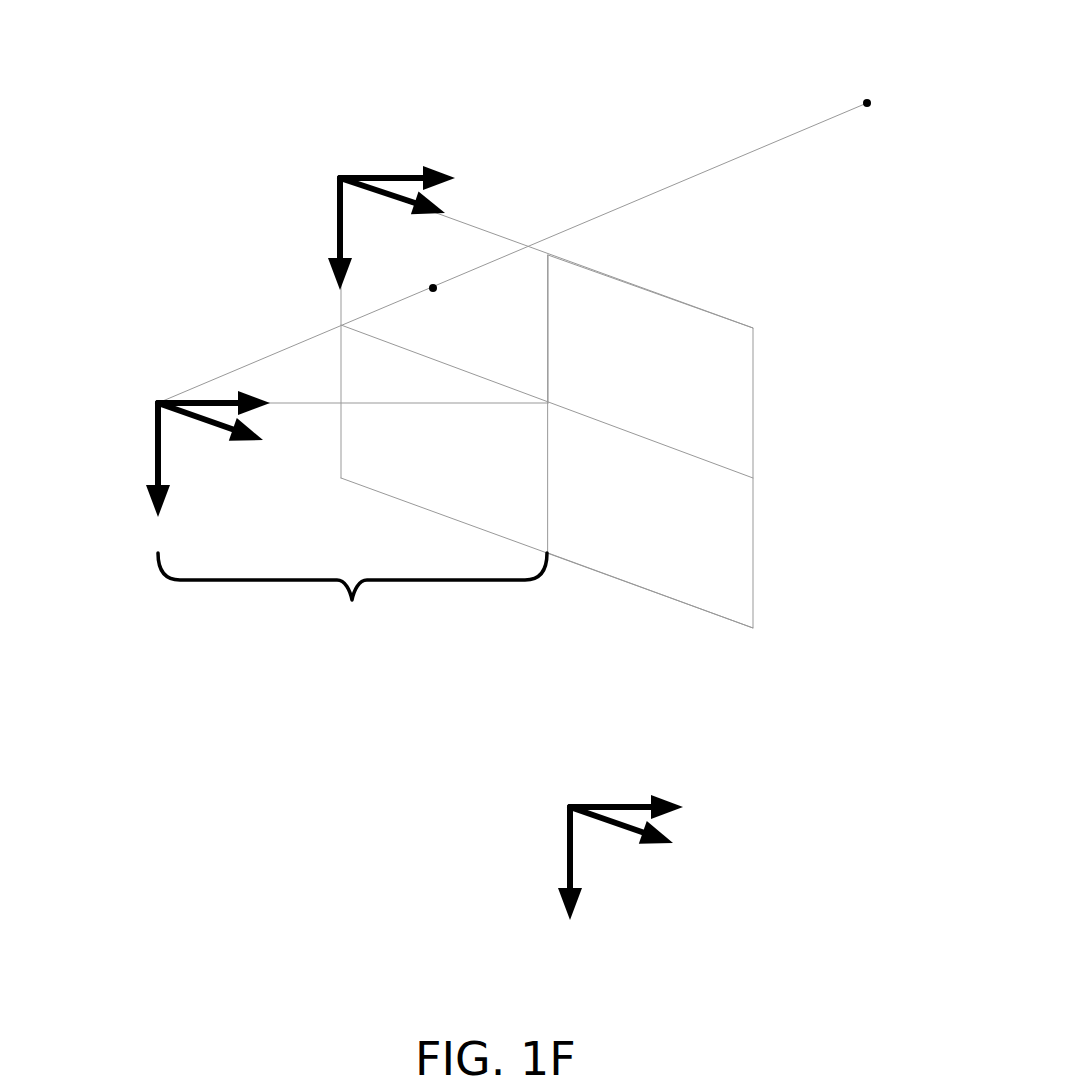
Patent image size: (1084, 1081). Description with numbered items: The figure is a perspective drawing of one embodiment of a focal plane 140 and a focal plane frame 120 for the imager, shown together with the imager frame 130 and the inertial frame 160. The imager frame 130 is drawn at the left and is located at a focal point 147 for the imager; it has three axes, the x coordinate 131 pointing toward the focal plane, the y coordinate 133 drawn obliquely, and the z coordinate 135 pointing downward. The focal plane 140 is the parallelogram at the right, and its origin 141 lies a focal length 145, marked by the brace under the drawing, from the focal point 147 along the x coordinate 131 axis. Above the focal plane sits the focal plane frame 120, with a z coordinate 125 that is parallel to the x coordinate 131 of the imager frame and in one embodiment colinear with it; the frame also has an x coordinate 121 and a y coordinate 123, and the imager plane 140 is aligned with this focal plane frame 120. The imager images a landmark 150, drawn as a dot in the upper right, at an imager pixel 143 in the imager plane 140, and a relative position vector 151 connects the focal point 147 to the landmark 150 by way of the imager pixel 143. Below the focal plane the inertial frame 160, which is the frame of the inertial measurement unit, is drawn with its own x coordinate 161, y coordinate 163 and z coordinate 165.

The focal plane frame 120 is at (356, 150).
The x axis of X frame 121 is at (378, 193).
The y axis of X frame 123 is at (300, 211).
The z coordinate of focal plane frame 125 is at (405, 176).
The imager frame 130 is at (173, 381).
The x coordinate of imager frame 131 is at (224, 402).
The y coordinate of imager frame 133 is at (200, 420).
The z coordinate of imager frame 135 is at (153, 440).
The focal plane 140 is at (753, 565).
The origin 141 is at (550, 403).
The imager pixel 143 is at (437, 292).
The focal length 145 is at (352, 597).
The focal point 147 is at (170, 425).
The landmark 150 is at (870, 108).
The relative position vector 151 is at (327, 327).
The inertial frame 160 is at (585, 780).
The x coordinate of inertial frame 161 is at (632, 805).
The y coordinate of inertial frame 163 is at (615, 825).
The z coordinate of inertial frame 165 is at (529, 842).